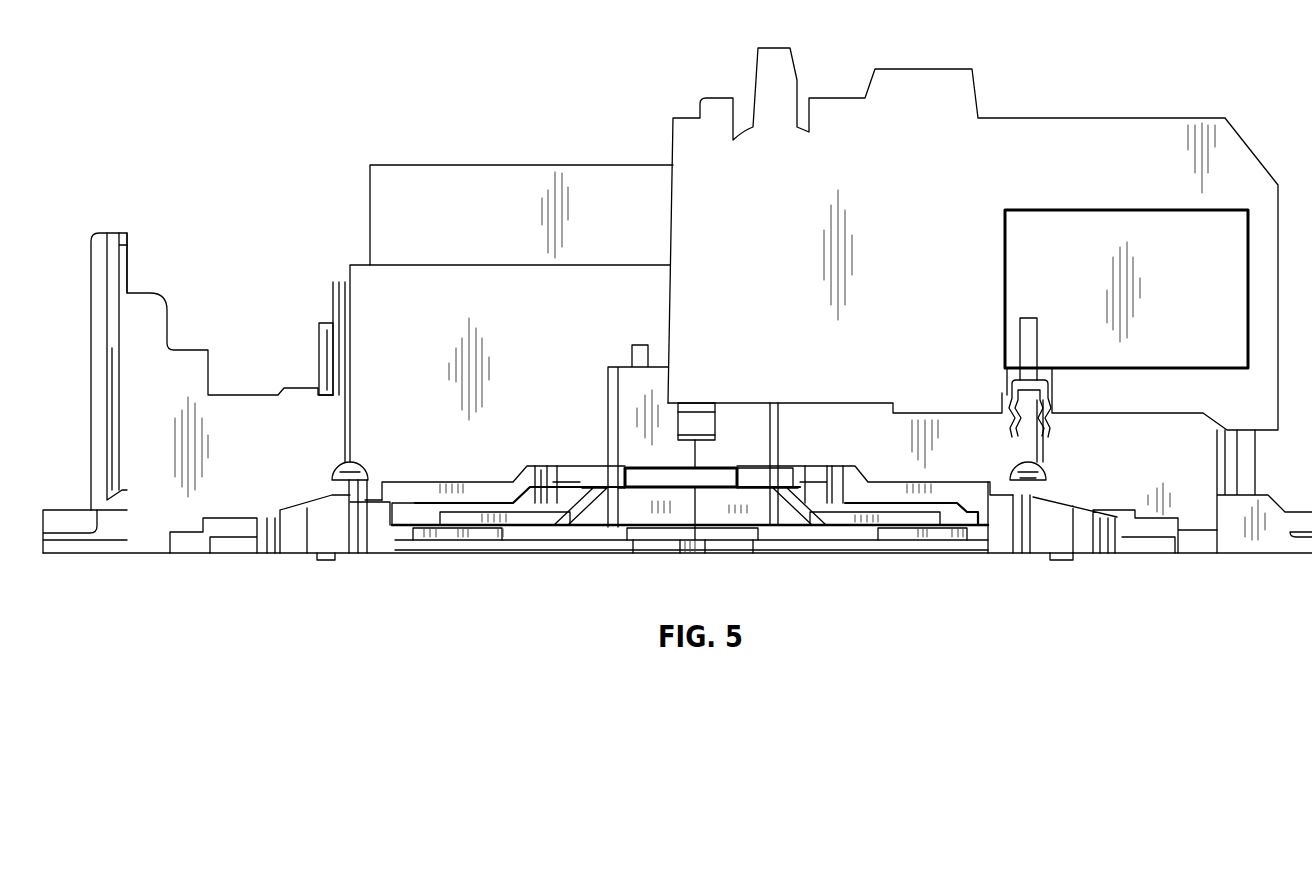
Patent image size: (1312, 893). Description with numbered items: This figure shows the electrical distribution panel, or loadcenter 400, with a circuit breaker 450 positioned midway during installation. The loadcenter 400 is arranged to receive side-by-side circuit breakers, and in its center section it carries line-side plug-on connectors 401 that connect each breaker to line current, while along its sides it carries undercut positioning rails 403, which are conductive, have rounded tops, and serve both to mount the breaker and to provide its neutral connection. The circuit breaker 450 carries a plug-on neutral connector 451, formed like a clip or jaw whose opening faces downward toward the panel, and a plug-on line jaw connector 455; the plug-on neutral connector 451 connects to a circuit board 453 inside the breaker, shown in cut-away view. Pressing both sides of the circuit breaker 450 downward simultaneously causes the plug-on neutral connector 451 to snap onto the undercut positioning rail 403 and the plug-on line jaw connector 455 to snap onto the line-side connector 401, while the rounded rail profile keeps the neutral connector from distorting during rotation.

The loadcenter 400 is at (522, 158).
The line-side plug-on connector 401 is at (693, 477).
The undercut positioning rail 403 is at (357, 487).
The circuit breaker 450 is at (1093, 118).
The plug-on neutral connector 451 is at (1008, 395).
The circuit board 453 is at (1080, 261).
The plug-on line jaw connector 455 is at (693, 403).